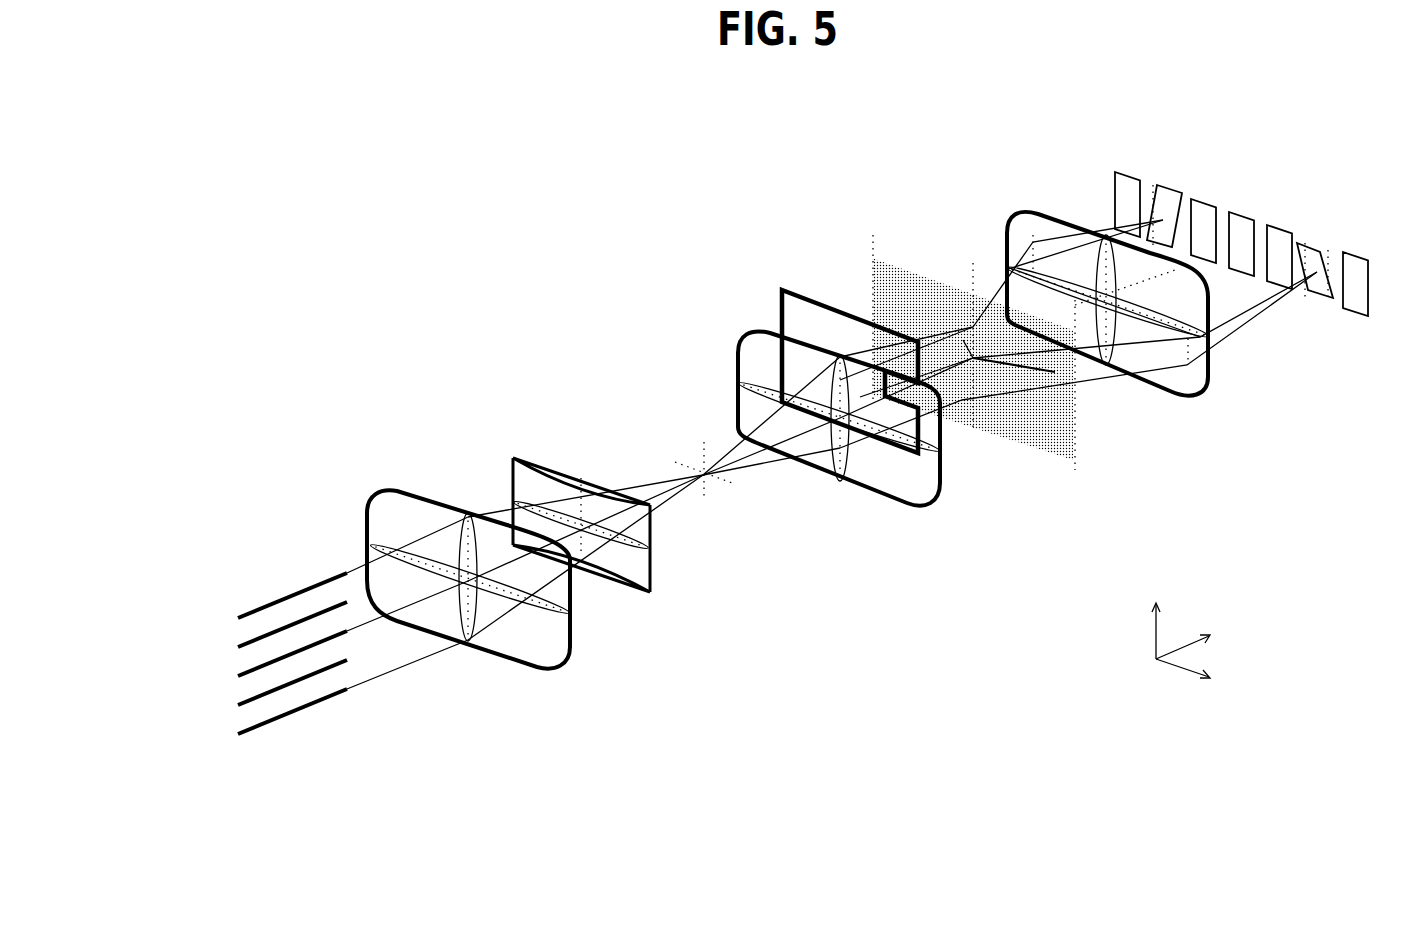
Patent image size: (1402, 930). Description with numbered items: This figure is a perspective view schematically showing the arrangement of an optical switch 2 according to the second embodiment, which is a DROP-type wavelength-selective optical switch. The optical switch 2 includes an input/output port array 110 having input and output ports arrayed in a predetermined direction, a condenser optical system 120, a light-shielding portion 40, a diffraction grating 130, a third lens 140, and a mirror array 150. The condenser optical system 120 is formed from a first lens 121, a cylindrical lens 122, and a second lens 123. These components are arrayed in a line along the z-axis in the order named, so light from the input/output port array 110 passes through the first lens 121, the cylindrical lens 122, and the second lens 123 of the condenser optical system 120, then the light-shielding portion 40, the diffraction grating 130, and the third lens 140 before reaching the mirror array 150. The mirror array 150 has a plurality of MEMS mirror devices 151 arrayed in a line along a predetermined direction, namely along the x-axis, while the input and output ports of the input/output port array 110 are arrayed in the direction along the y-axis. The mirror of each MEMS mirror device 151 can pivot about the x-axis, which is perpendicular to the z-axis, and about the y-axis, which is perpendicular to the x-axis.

The optical switch 2 is at (310, 122).
The input/output port array 110 is at (222, 603).
The condenser optical system 120 is at (727, 276).
The first lens 121 is at (390, 490).
The cylindrical lens 122 is at (512, 457).
The second lens 123 is at (754, 332).
The light-shielding portion 40 is at (802, 292).
The diffraction grating 130 is at (917, 270).
The third lens 140 is at (1032, 212).
The mirror array 150 is at (1246, 252).
The MEMS mirror device 151 is at (1353, 304).